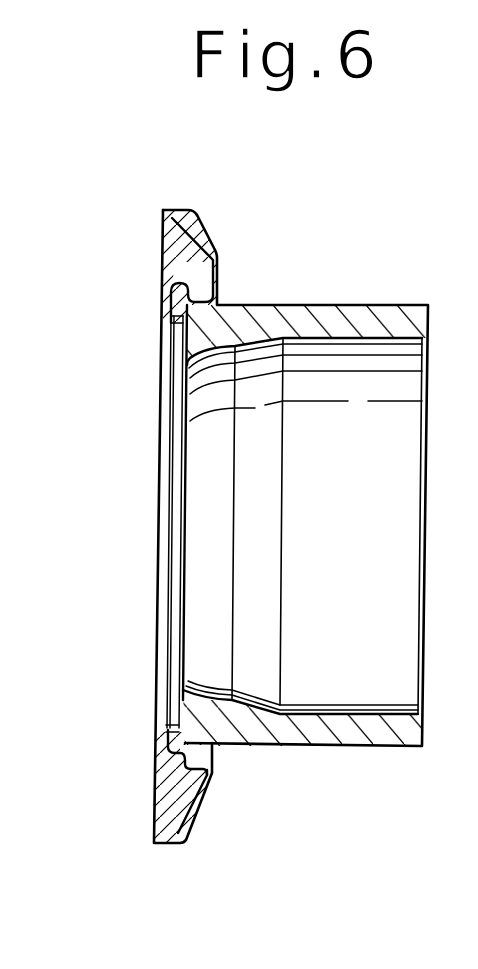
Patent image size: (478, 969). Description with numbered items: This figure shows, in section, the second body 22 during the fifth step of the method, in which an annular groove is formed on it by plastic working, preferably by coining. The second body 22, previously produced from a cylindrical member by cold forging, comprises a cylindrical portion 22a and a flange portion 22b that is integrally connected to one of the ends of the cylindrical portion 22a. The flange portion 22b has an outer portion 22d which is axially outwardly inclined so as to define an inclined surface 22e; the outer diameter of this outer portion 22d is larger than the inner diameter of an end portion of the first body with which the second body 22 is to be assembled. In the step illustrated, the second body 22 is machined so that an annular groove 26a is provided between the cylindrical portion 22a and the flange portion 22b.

The second body 22 is at (376, 242).
The cylindrical portion 22a is at (396, 303).
The flange portion 22b is at (148, 273).
The outer portion 22d is at (183, 228).
The inclined surface 22e is at (214, 241).
The annular groove 26a is at (224, 296).